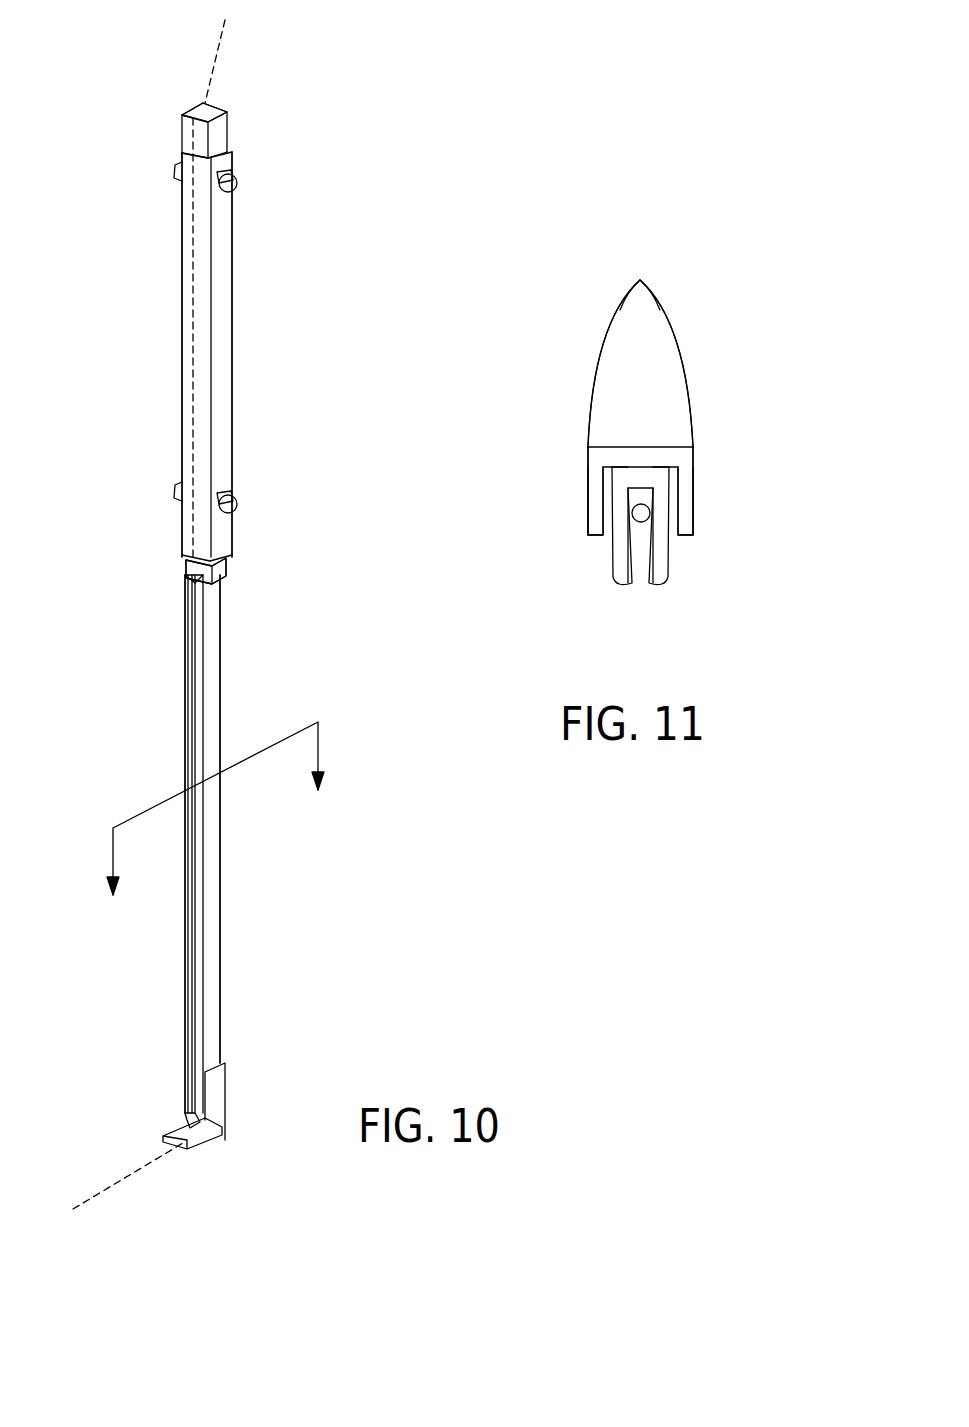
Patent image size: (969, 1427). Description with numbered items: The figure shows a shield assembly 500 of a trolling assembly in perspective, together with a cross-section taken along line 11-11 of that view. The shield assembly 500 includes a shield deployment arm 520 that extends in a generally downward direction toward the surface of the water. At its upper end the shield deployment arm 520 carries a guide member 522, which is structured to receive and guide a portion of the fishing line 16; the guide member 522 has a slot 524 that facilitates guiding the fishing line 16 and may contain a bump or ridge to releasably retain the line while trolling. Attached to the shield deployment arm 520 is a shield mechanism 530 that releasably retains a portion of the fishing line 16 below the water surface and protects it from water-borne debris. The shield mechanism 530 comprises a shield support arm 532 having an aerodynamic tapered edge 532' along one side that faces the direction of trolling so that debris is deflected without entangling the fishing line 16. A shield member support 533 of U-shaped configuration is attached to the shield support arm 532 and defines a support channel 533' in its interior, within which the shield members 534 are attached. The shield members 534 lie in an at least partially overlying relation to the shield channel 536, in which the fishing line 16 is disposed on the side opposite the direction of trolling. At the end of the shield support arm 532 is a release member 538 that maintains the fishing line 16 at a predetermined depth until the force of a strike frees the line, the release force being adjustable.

In FIG. 10, the fishing line 16 is at (215, 70).
In FIG. 10, the shield assembly 500 is at (148, 556).
In FIG. 10, the shield deployment arm 520 is at (247, 318).
In FIG. 10, the guide member 522 is at (220, 125).
In FIG. 10, the slot 524 is at (210, 100).
In FIG. 10, the shield mechanism 530 is at (245, 623).
In FIG. 11, the shield mechanism 530 is at (567, 330).
In FIG. 10, the shield support arm 532 is at (290, 857).
In FIG. 11, the shield support arm 532 is at (707, 337).
In FIG. 11, the tapered edge 532' is at (682, 213).
In FIG. 11, the shield member support 533 is at (719, 469).
In FIG. 11, the support channel 533' is at (645, 508).
In FIG. 10, the shield member 534 is at (187, 970).
In FIG. 11, the shield member 534 is at (623, 590).
In FIG. 11, the shield channel 536 is at (640, 545).
In FIG. 10, the release member 538 is at (212, 1142).
In FIG. 10, the section line 11- 11 is at (216, 824).